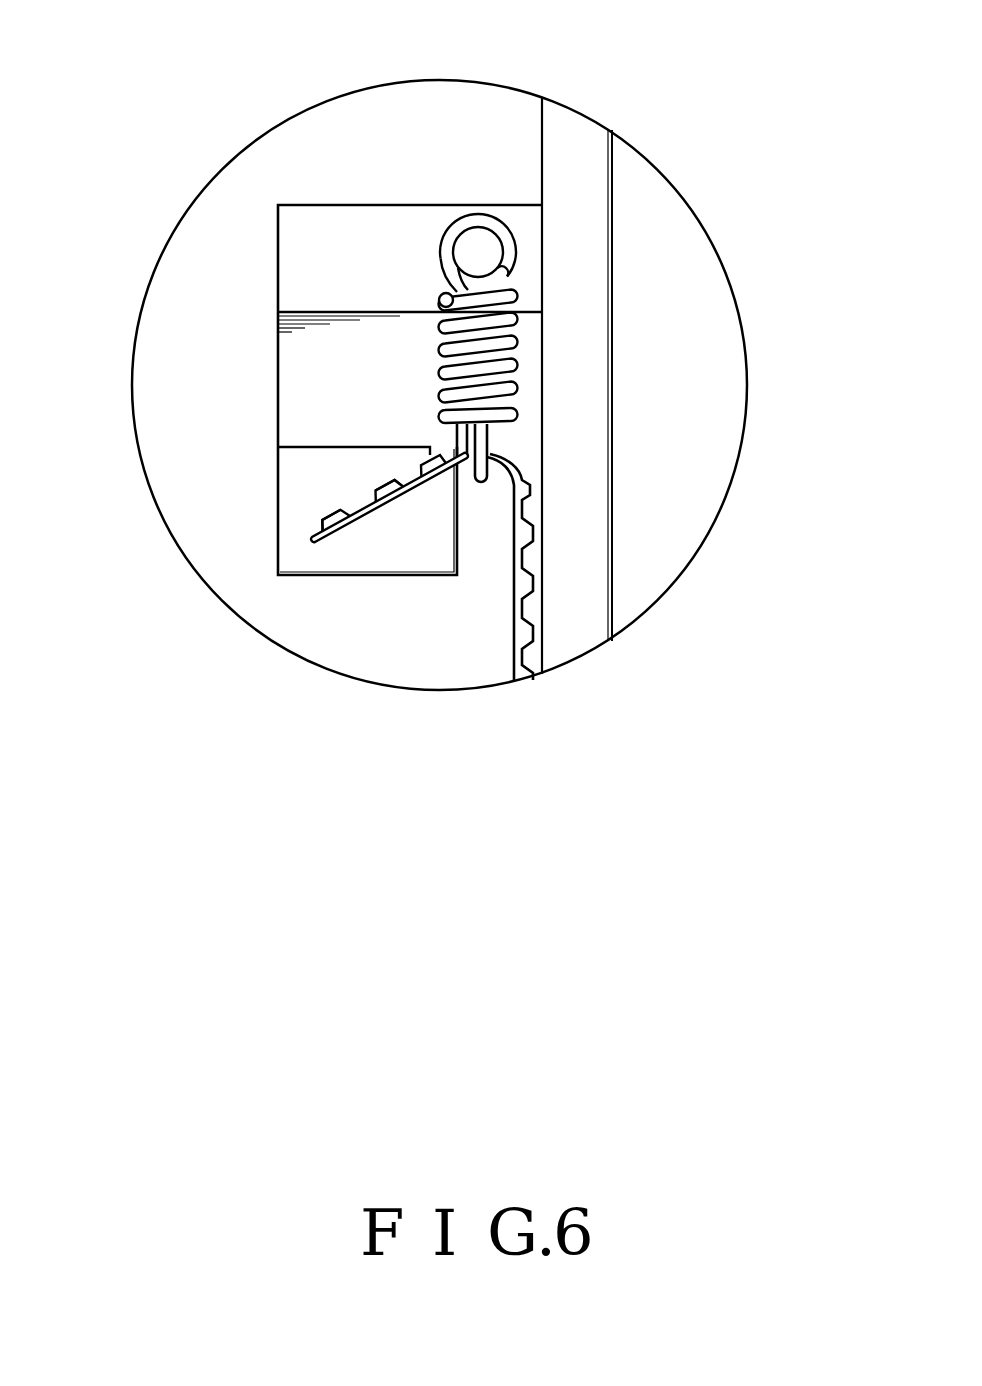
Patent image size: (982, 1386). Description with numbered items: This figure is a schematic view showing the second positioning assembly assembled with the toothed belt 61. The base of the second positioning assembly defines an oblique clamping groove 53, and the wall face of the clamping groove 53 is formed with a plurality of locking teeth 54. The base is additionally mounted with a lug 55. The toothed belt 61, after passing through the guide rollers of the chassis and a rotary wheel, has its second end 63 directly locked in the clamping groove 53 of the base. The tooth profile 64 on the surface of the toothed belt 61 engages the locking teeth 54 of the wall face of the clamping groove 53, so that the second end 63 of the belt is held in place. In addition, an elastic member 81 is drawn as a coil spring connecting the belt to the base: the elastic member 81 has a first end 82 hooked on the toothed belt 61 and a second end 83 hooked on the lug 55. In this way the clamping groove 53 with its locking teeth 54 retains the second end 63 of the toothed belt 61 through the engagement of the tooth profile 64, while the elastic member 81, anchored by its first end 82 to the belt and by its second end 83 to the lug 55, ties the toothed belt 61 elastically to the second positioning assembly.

The clamping groove 53 is at (410, 495).
The locking teeth 54 is at (400, 478).
The lug 55 is at (487, 243).
The toothed belt 61 is at (519, 579).
The second end 63 is at (363, 523).
The tooth profile 64 is at (328, 520).
The elastic member 81 is at (516, 344).
The first end 82 is at (485, 445).
The second end 83 is at (443, 243).